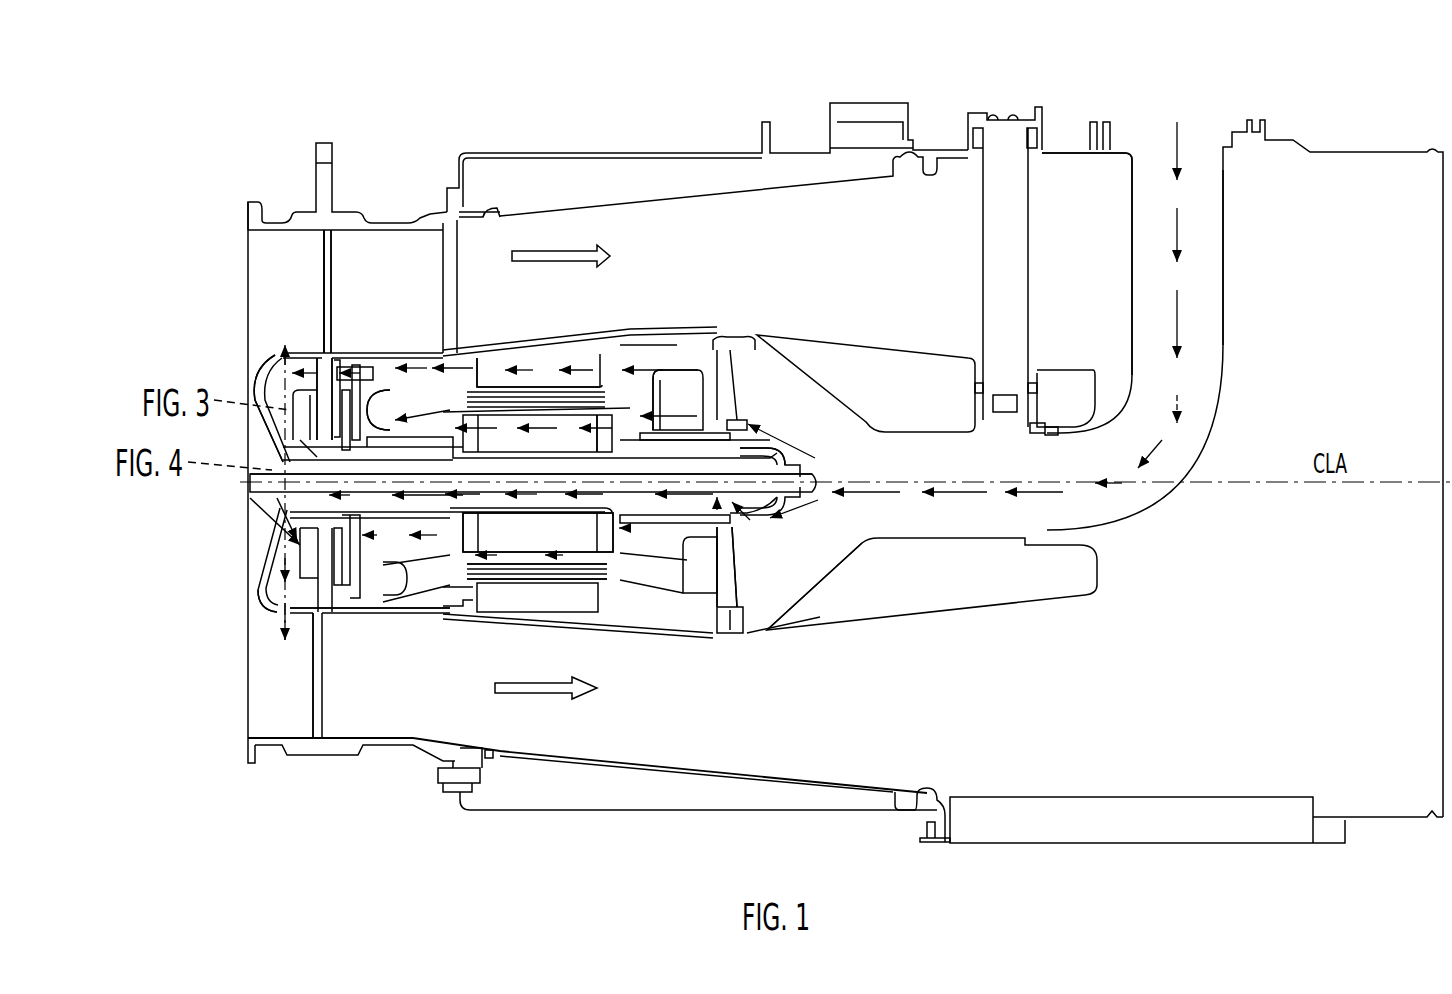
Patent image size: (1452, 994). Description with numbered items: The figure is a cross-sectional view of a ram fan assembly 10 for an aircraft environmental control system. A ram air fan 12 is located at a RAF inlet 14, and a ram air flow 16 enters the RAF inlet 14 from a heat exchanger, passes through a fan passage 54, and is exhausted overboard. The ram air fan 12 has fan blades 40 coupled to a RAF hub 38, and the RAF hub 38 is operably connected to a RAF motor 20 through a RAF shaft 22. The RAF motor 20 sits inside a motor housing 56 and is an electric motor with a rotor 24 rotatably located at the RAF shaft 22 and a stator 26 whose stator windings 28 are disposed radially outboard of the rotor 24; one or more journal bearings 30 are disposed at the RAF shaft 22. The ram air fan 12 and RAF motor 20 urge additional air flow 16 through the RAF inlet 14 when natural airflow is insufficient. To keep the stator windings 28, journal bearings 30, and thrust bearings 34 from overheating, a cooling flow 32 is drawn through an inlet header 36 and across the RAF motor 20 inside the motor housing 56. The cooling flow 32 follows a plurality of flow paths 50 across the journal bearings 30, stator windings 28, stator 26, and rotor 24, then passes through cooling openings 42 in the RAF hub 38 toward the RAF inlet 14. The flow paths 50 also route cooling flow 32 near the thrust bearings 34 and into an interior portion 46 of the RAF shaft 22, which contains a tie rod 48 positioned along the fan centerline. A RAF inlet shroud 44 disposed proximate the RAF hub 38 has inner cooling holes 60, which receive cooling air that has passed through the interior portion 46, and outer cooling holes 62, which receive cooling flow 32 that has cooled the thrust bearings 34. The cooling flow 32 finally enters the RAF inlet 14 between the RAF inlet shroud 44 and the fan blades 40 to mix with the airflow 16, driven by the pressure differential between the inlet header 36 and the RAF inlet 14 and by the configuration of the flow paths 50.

The ram fan assembly 10 is at (540, 88).
The ram air fan 12 is at (297, 250).
The RAF inlet 14 is at (290, 715).
The ram air flow 16 is at (610, 255).
The RAF motor 20 is at (540, 570).
The RAF shaft 22 is at (783, 460).
The rotor 24 is at (497, 537).
The stator 26 is at (510, 405).
The stator windings 28 is at (620, 403).
The journal bearings 30 is at (373, 393).
The cooling flow 32 is at (320, 333).
The thrust bearings 34 is at (345, 608).
The inlet header 36 is at (1143, 150).
The RAF hub 38 is at (288, 445).
The fan blades 40 is at (333, 275).
The cooling openings 42 is at (340, 380).
The RAF inlet shroud 44 is at (269, 343).
The interior portion 46 is at (690, 512).
The tie rod 48 is at (370, 488).
The flow paths 50 is at (700, 400).
The fan passage 54 is at (849, 282).
The motor housing 56 is at (768, 640).
The inner cooling holes 60 is at (285, 512).
The outer cooling holes 62 is at (300, 599).